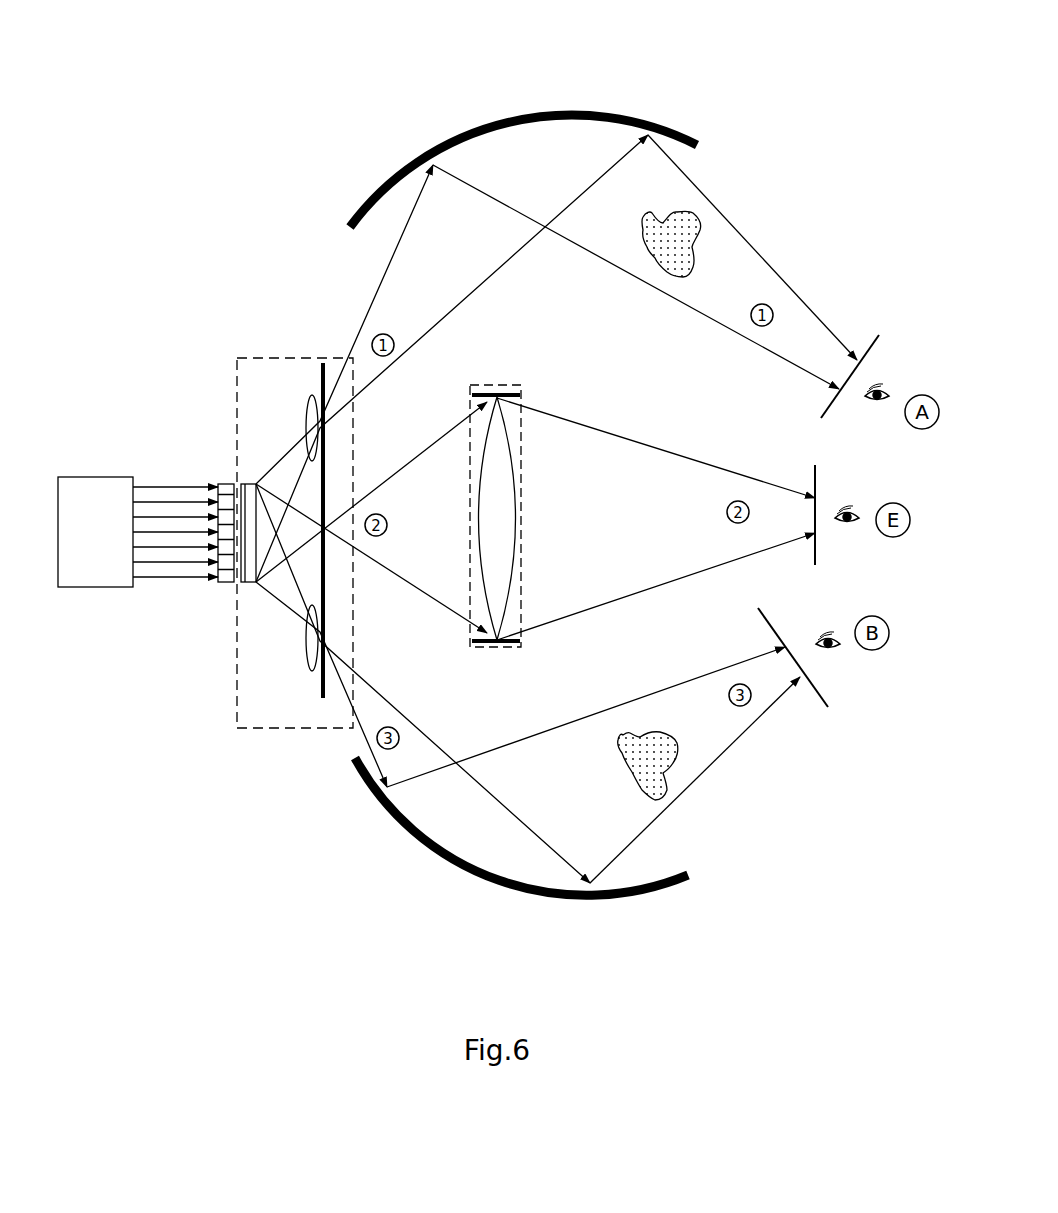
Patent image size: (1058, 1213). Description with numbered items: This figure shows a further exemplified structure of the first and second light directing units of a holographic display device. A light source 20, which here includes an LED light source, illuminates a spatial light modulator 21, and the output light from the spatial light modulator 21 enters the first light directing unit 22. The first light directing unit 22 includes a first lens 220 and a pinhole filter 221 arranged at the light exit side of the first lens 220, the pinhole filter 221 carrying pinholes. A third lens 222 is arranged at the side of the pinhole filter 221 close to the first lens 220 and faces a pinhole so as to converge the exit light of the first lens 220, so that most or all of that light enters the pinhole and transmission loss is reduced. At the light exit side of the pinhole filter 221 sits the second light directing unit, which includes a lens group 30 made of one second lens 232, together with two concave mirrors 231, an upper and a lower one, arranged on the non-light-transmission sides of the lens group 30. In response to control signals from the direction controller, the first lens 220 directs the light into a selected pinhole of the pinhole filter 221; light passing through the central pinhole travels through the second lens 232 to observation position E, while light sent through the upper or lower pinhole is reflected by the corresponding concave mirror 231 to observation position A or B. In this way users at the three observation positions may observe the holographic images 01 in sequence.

The light source 20 is at (97, 560).
The spatial light modulator 21 is at (226, 520).
The first light directing unit 22 is at (267, 702).
The first lens 220 is at (252, 480).
The pinhole filter 221 is at (325, 593).
The third lens 222 is at (312, 395).
The concave mirror 231 is at (515, 117).
The second lens 232 is at (497, 542).
The lens group 30 is at (522, 477).
The holographic image 01 is at (703, 228).